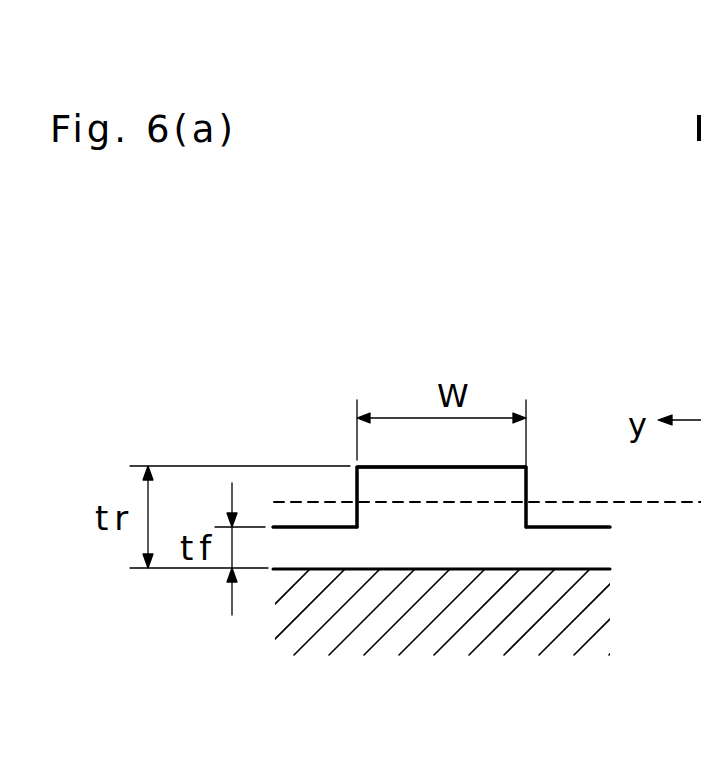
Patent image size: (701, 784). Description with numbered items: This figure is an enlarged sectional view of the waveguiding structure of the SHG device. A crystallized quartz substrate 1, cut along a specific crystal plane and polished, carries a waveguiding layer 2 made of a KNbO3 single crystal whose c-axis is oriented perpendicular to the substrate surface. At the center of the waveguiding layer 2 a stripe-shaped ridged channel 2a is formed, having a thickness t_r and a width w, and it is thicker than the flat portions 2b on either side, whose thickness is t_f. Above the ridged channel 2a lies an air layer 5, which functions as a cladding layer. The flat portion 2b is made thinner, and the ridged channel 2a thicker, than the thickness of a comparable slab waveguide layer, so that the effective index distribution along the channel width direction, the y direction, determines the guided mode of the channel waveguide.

The crystallized quartz substrate 1 is at (582, 630).
The waveguiding layer 2 is at (610, 543).
The ridged channel 2a is at (387, 477).
The flat portions 2b is at (553, 540).
The air layer 5 is at (383, 374).